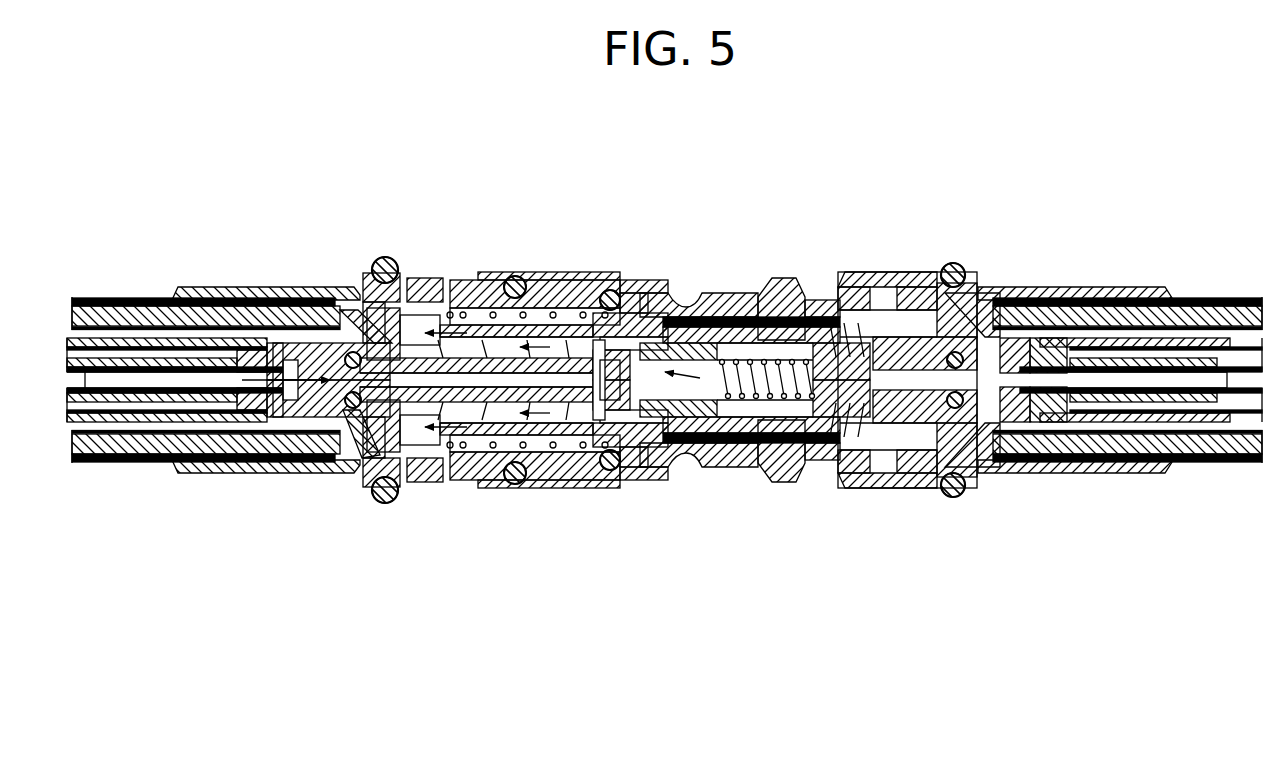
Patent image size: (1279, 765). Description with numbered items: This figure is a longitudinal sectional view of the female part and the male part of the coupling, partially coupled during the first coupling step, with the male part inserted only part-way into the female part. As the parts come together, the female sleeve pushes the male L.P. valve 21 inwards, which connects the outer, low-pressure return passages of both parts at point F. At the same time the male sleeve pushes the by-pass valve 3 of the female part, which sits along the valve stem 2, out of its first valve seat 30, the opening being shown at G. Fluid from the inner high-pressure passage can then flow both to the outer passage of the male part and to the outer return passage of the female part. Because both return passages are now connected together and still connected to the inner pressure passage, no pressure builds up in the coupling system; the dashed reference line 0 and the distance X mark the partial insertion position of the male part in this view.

The first valve seat 30 is at (592, 350).
The by-pass valve 3 is at (600, 345).
The male L.P. valve 21 is at (712, 332).
The valve stem 2 is at (683, 440).
The connection point of outer passages F is at (660, 319).
The location of by-pass valve opening G is at (740, 418).
The reference position 0 is at (663, 535).
The displacement X is at (618, 222).